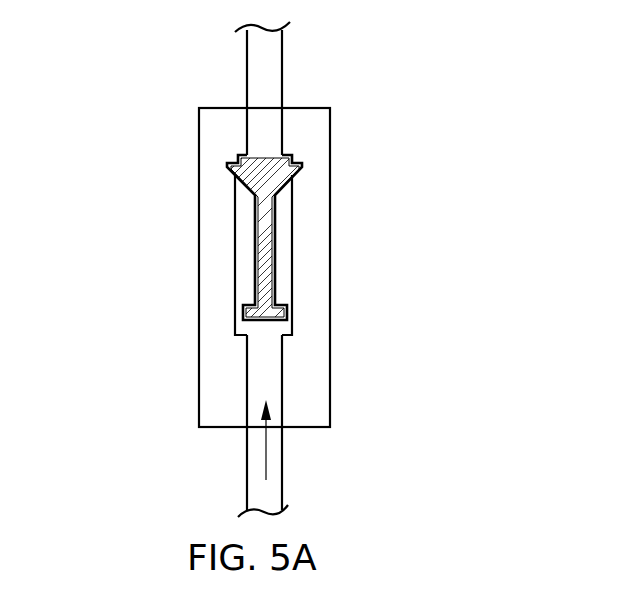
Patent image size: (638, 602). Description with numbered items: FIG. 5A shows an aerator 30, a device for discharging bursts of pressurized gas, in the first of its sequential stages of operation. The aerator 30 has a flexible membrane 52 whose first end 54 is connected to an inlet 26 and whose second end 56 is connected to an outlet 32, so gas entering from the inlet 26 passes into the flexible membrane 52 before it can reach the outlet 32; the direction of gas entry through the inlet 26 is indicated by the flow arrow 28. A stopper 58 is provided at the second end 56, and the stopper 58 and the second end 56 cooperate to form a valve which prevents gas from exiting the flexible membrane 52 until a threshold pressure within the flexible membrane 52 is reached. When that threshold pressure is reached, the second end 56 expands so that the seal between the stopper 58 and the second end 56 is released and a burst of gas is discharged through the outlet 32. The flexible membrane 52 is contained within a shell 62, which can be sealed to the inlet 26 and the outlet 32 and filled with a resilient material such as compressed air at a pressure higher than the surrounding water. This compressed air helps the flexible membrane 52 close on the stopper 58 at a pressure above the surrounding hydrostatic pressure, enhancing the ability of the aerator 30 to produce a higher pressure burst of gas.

The inlet 26 is at (283, 463).
The flow direction arrow 28 is at (265, 472).
The aerator 30 is at (148, 261).
The outlet 32 is at (283, 70).
The flexible membrane 52 is at (237, 226).
The first end 54 is at (218, 341).
The second end 56 is at (215, 157).
The stopper 58 is at (290, 180).
The shell 62 is at (331, 138).